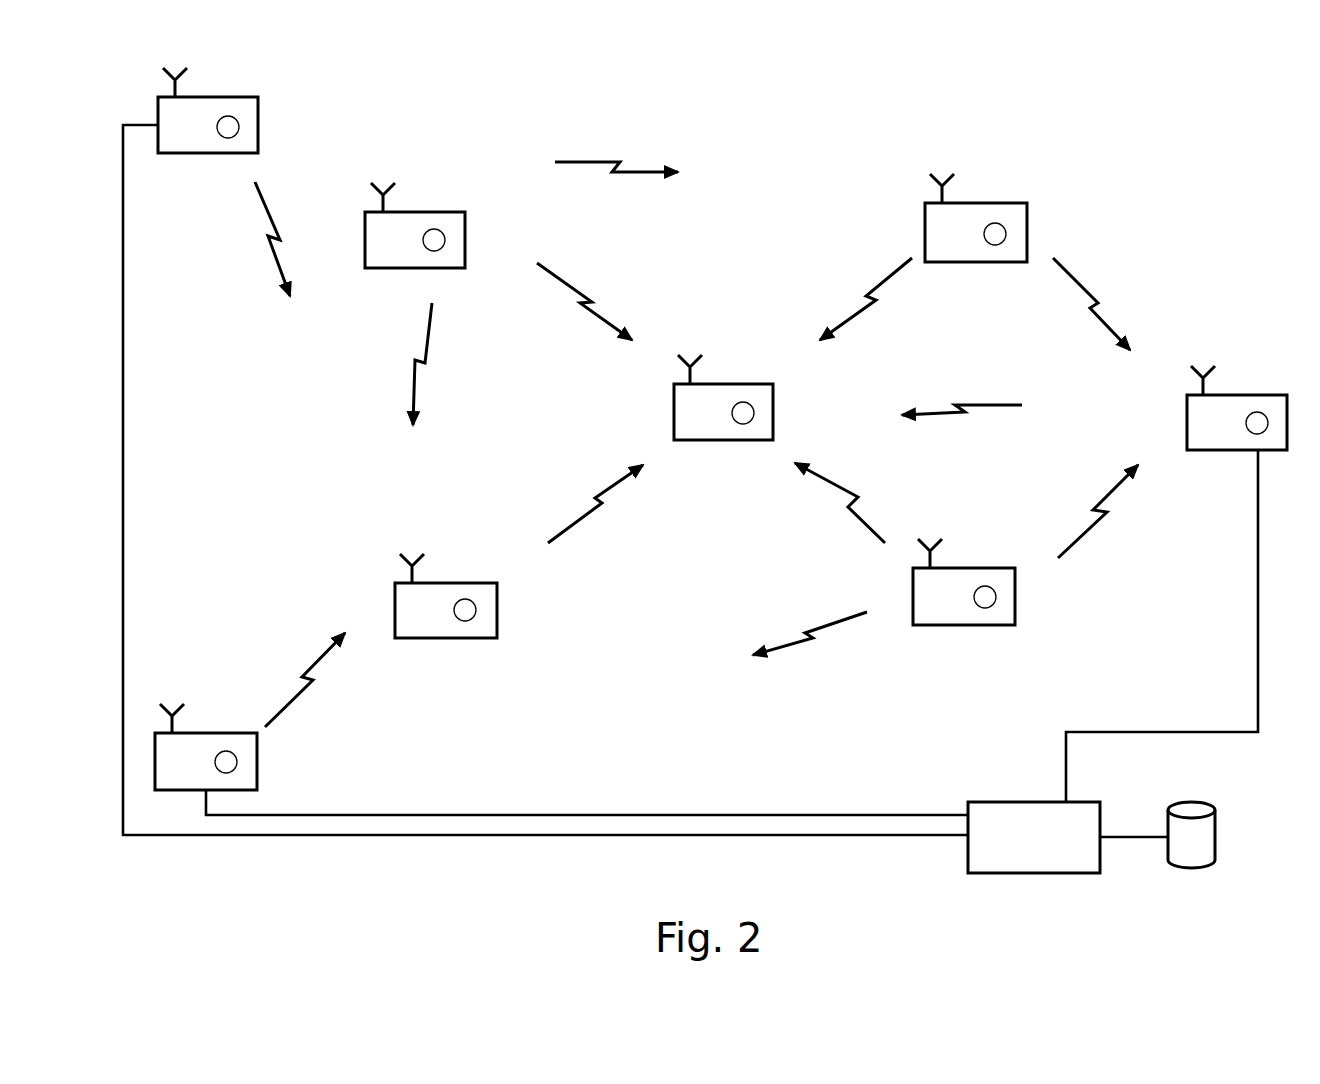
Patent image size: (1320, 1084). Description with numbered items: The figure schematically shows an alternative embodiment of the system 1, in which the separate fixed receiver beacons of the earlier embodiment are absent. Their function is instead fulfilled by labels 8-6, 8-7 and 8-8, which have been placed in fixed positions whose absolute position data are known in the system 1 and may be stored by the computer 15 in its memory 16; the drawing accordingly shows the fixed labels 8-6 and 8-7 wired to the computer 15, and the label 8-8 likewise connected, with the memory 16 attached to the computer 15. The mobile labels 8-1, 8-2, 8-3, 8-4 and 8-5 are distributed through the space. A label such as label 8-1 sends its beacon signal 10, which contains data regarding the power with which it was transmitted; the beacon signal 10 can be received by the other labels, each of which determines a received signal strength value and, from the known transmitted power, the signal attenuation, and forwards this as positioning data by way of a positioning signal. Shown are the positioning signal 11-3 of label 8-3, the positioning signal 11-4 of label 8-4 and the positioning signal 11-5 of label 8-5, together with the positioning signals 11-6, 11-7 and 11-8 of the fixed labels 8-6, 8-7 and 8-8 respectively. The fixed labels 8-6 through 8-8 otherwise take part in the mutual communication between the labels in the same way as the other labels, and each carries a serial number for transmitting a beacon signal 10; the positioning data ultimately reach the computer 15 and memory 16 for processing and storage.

The system 1 is at (1098, 150).
The label 8-1 is at (442, 212).
The label 8-2 is at (735, 384).
The label 8-3 is at (1000, 203).
The label 8-4 is at (468, 583).
The label 8-5 is at (985, 568).
The label 8-6 is at (212, 153).
The label 8-7 is at (228, 733).
The label 8-8 is at (1220, 450).
The beacon signal 10 is at (628, 172).
The positioning signal 11-3 is at (897, 272).
The positioning signal 11-4 is at (572, 520).
The positioning signal 11-5 is at (1095, 525).
The positioning signal 11-6 is at (268, 240).
The positioning signal 11-7 is at (303, 690).
The positioning signal 11-8 is at (960, 415).
The computer 15 is at (1000, 802).
The memory 16 is at (1215, 835).